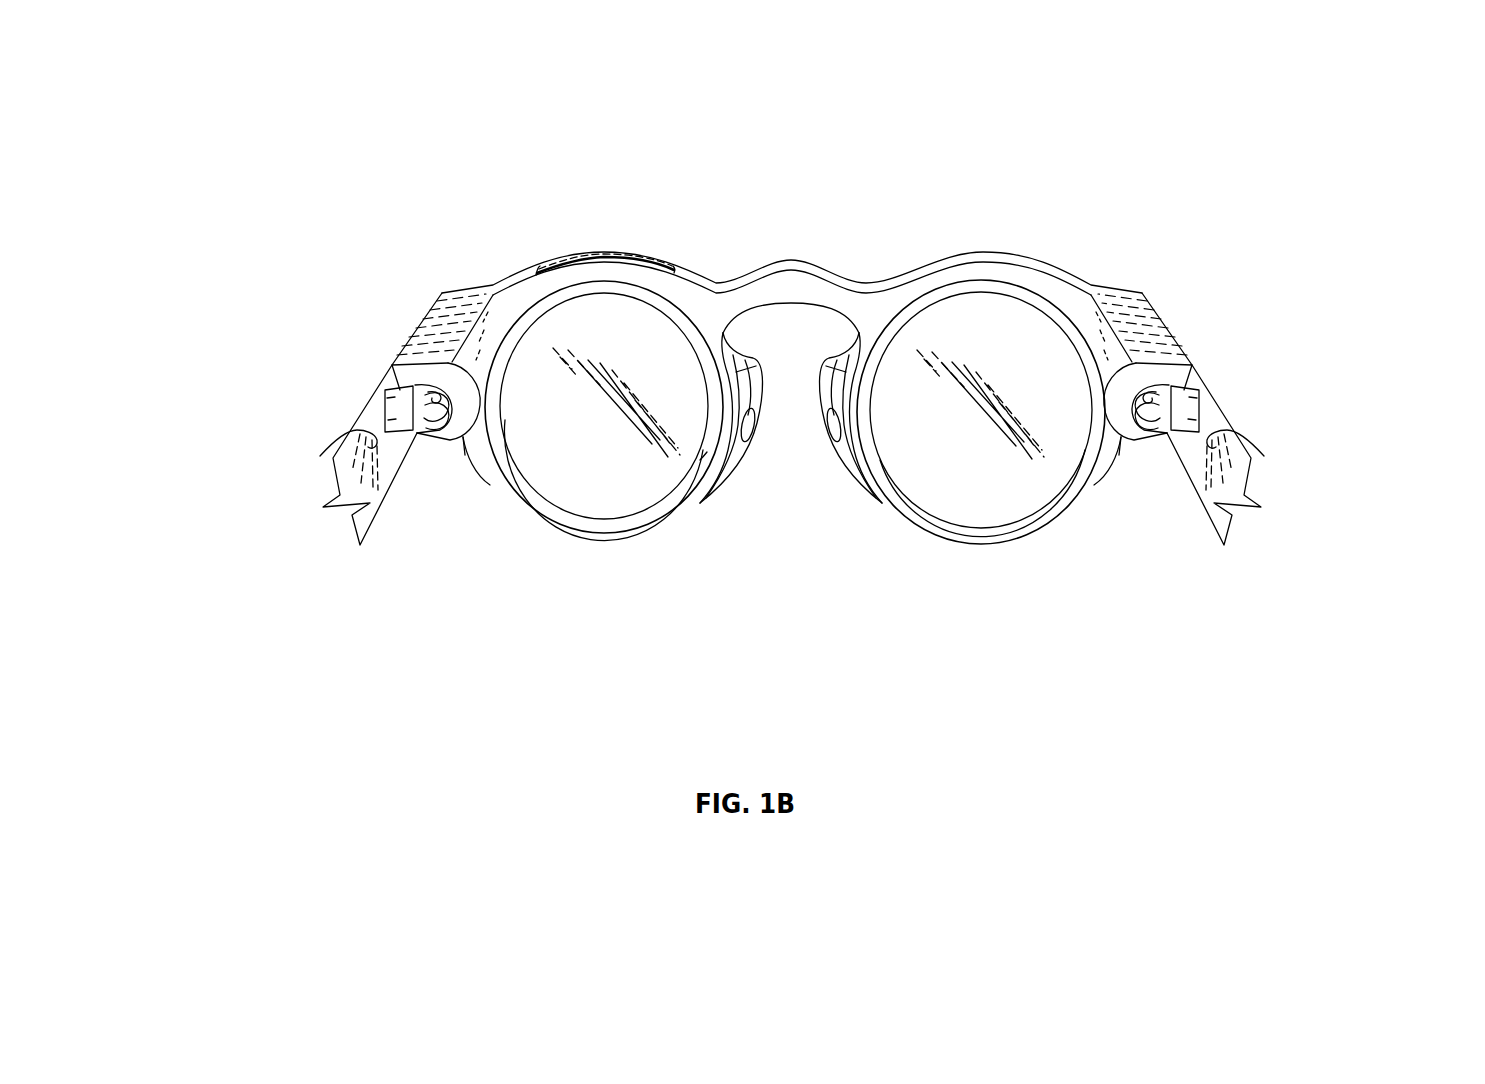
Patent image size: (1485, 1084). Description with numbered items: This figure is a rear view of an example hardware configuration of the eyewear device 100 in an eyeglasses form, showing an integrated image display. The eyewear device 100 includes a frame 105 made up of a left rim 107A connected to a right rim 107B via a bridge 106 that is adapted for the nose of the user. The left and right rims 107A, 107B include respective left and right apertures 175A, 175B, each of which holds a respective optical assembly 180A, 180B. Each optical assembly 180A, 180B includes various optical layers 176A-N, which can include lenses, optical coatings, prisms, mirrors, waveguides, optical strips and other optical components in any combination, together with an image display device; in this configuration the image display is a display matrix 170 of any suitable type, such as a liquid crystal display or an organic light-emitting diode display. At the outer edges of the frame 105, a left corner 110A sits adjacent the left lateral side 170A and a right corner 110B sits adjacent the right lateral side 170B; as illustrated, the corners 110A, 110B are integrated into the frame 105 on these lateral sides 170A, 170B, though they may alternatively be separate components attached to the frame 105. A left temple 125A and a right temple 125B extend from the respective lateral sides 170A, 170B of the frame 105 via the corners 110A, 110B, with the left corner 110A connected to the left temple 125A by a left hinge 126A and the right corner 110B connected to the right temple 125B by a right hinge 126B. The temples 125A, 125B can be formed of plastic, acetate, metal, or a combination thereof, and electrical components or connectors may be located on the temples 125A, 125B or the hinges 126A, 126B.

The eyewear device 100 is at (362, 118).
The frame 105 is at (933, 263).
The bridge 106 is at (790, 258).
The display matrix 170 is at (605, 250).
The left rim 107A is at (630, 530).
The right rim 107B is at (1078, 483).
The left aperture 175A is at (508, 455).
The right aperture 175B is at (913, 517).
The optical layers 176A-N is at (713, 440).
The left optical assembly 180A is at (583, 487).
The right optical assembly 180B is at (1003, 497).
The left corner 110A is at (430, 308).
The right corner 110B is at (1150, 307).
The left lateral side 170A is at (443, 292).
The right lateral side 170B is at (1093, 283).
The left hinge 126A is at (402, 403).
The right hinge 126B is at (1173, 407).
The left temple 125A is at (372, 433).
The right temple 125B is at (1212, 428).